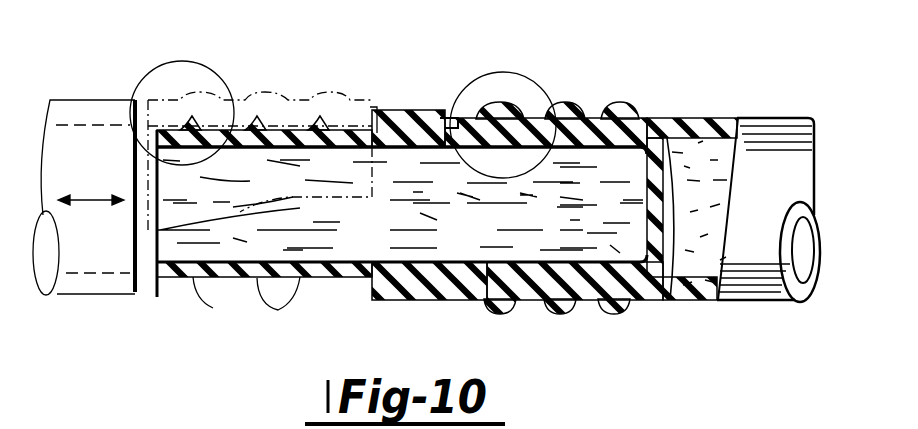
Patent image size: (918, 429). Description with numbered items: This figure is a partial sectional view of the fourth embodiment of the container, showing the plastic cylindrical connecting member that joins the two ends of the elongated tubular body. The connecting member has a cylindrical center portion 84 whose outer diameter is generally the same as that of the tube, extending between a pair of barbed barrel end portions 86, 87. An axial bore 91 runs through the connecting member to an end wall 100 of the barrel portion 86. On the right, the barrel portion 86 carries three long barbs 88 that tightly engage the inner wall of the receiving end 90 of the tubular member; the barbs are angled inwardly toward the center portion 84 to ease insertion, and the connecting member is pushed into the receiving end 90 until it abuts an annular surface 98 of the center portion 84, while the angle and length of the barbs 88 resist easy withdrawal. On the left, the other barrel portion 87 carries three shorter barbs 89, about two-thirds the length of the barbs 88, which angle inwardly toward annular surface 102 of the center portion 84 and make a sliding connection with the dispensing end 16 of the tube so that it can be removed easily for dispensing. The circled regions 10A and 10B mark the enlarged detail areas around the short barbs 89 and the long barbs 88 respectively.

The dispensing end 16 is at (98, 116).
The detail area 10A is at (251, 136).
The barbed barrel end portion 87 is at (253, 125).
The annular surface 102 is at (357, 126).
The cylindrical center portion 84 is at (405, 118).
The annular surface 98 is at (447, 130).
The detail area 10B is at (503, 112).
The barbed barrel end portion 86 is at (593, 133).
The end wall 100 is at (677, 168).
The receiving end 90 is at (717, 127).
The short barbs (barbed elements or retaining elements) 89 is at (305, 297).
The axial bore 91 is at (393, 217).
The long barbs (barbed elements or retaining elements) 88 is at (617, 307).